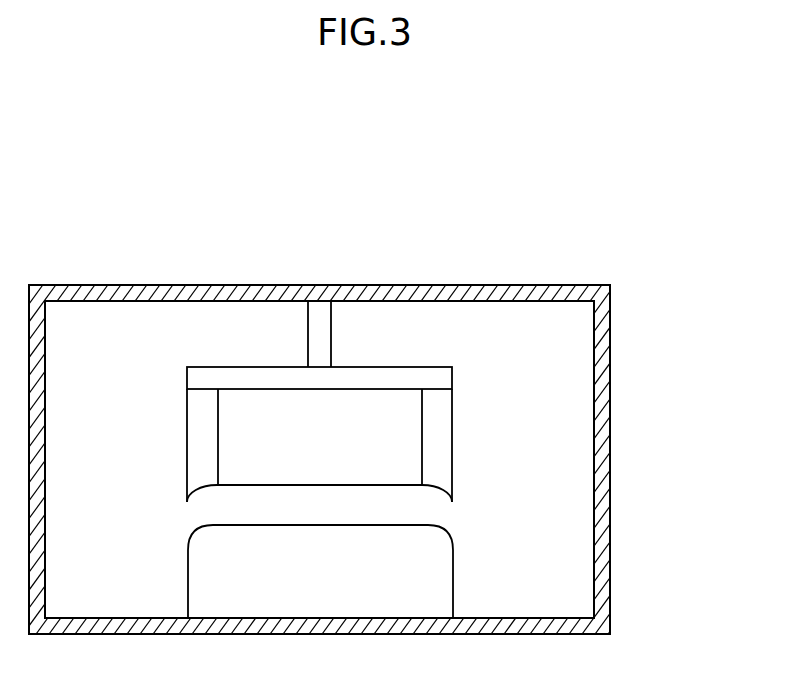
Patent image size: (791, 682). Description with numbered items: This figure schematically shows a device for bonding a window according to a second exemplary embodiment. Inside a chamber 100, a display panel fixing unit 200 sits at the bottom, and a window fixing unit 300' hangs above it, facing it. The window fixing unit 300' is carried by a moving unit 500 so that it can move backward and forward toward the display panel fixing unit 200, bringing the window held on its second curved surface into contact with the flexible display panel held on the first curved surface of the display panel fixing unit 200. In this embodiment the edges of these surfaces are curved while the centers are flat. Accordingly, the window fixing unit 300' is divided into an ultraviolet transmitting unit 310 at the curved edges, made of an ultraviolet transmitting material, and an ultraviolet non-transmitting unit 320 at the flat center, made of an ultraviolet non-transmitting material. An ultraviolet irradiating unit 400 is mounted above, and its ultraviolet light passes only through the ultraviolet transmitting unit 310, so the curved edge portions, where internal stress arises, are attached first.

The chamber 100 is at (555, 293).
The display panel fixing unit 200 is at (437, 567).
The window fixing unit 300' is at (453, 445).
The ultraviolet transmitting unit 310 is at (437, 422).
The ultraviolet non-transmitting unit 320 is at (395, 448).
The ultraviolet irradiating unit 400 is at (437, 379).
The moving unit 500 is at (320, 335).